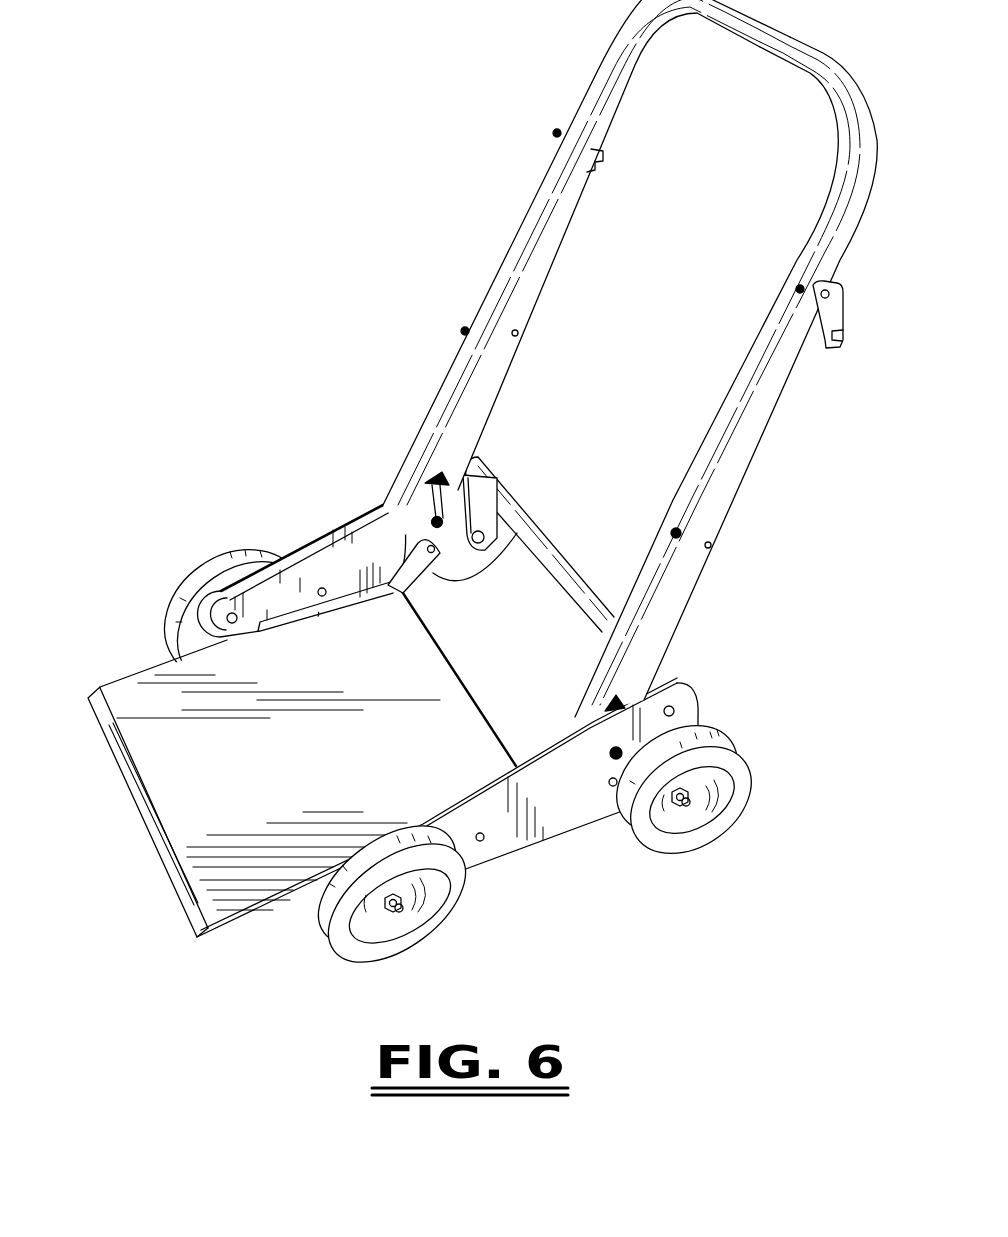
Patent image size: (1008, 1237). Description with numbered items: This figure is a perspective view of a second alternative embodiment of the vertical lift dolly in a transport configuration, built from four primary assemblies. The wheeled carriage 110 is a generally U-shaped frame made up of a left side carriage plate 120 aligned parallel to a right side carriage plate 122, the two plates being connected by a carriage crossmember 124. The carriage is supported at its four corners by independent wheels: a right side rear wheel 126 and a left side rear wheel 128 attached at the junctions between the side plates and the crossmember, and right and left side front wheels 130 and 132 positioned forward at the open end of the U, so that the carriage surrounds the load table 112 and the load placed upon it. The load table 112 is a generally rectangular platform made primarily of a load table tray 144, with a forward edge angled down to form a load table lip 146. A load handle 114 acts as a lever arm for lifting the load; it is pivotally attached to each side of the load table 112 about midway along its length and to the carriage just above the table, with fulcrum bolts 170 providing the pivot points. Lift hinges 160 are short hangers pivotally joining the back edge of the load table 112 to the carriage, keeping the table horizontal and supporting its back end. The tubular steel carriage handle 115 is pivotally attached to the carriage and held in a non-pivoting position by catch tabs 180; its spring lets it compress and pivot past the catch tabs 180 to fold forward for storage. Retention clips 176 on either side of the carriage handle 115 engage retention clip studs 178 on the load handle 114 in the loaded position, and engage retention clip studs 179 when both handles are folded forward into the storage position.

The wheeled carriage 110 is at (350, 513).
The load table 112 is at (201, 803).
The load handle 114 is at (524, 218).
The carriage handle 115 is at (744, 468).
The left side carriage plate 120 is at (569, 815).
The right side carriage plate 122 is at (333, 546).
The carriage crossmember 124 is at (532, 520).
The right side rear wheel 126 is at (470, 578).
The left side rear wheel 128 is at (736, 795).
The right side front wheel 130 is at (212, 562).
The left side front wheel 132 is at (383, 946).
The load table tray 144 is at (344, 765).
The load table lip 146 is at (173, 878).
The lift hinges 160 is at (418, 587).
The fulcrum bolts 170 is at (323, 597).
The retention clips 176 is at (598, 160).
The retention clip studs 178 is at (553, 133).
The retention clip studs 179 is at (461, 330).
The catch tabs 180 is at (437, 474).